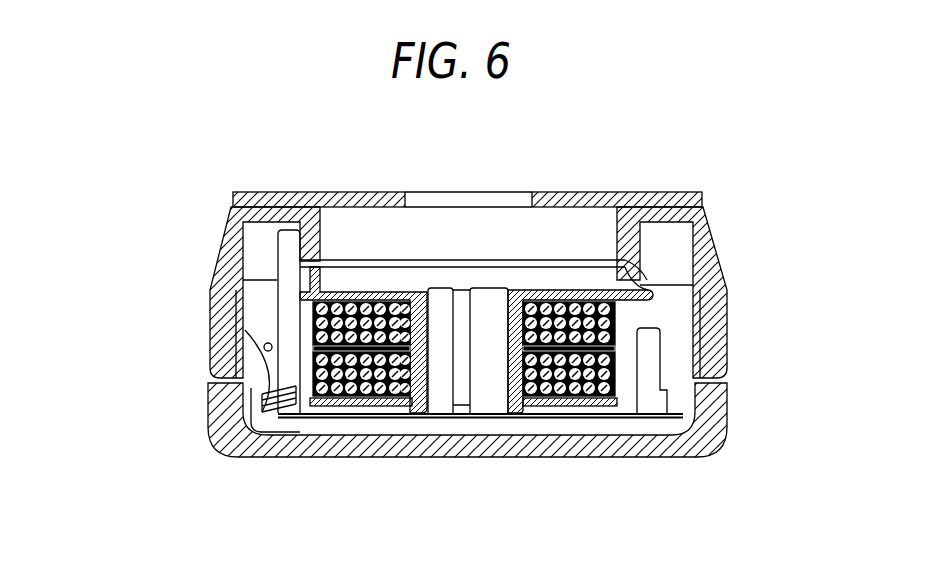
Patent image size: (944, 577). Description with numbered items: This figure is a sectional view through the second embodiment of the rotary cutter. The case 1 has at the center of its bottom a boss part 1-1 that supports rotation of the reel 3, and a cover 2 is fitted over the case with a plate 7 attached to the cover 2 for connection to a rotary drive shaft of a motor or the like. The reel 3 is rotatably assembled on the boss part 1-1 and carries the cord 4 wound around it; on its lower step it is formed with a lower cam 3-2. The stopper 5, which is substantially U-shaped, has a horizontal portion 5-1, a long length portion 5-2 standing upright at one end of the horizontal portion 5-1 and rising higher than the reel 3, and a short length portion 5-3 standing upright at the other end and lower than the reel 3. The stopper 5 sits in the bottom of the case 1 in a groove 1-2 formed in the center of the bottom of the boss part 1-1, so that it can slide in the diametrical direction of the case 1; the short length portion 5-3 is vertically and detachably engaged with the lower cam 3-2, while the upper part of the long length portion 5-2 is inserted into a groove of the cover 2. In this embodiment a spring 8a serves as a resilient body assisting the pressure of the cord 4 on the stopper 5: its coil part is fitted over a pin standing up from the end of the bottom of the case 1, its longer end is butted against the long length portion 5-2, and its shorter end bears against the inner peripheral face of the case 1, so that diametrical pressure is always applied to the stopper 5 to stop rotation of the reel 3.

The case 1 is at (313, 458).
The boss part 1-1 is at (487, 298).
The groove 1-2 is at (264, 423).
The cover 2 is at (721, 248).
The reel 3 is at (557, 298).
The lower cam 3-2 is at (613, 404).
The cord 4 is at (348, 393).
The stopper 5 is at (430, 423).
The horizontal portion 5-1 is at (527, 423).
The long length portion 5-2 is at (285, 257).
The short length portion 5-3 is at (652, 337).
The plate 7 is at (656, 192).
The spring 8a is at (243, 342).